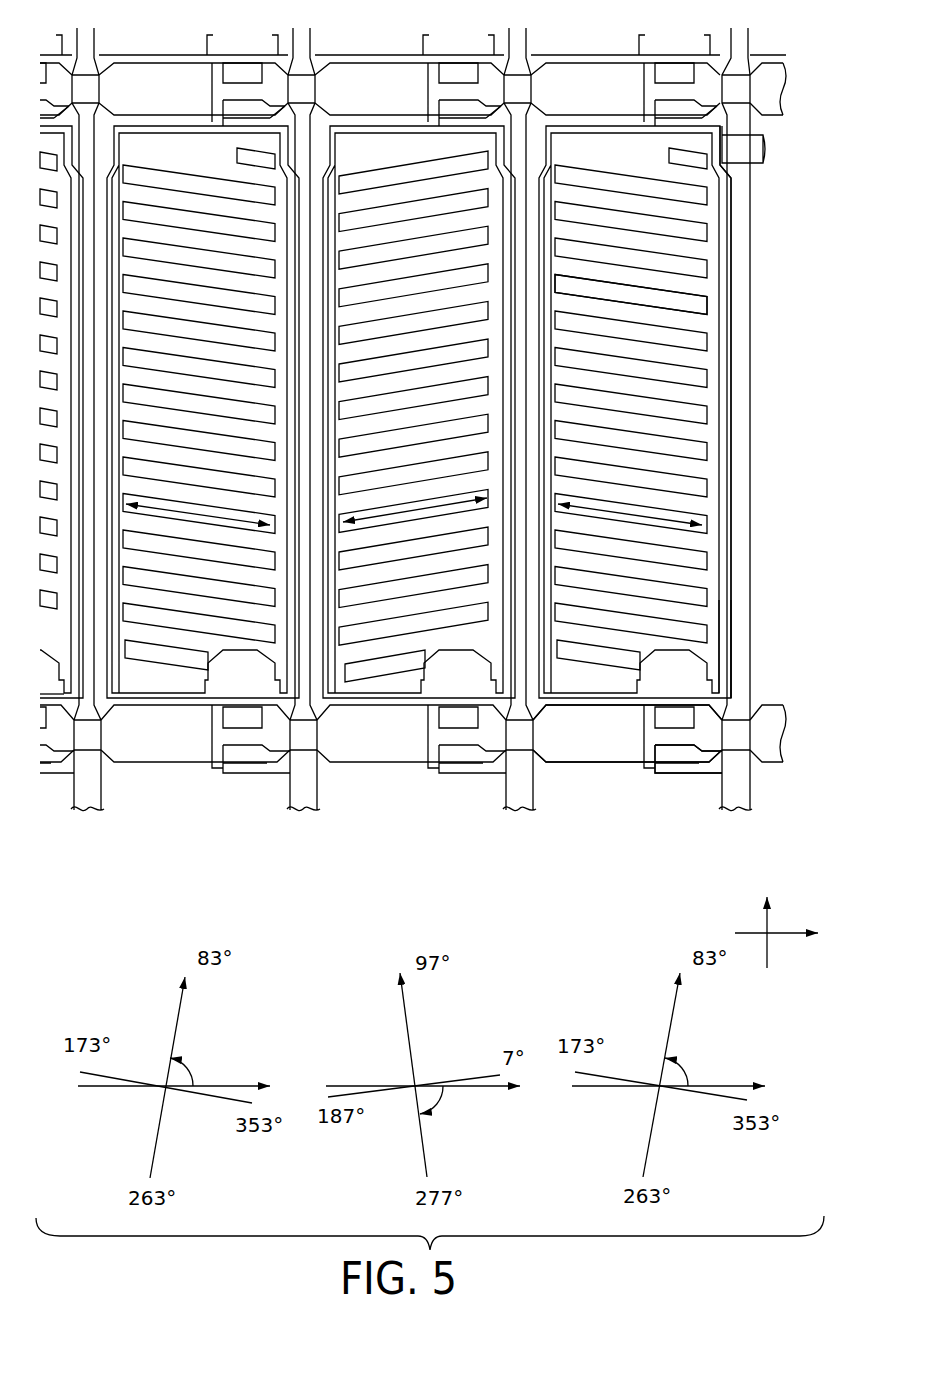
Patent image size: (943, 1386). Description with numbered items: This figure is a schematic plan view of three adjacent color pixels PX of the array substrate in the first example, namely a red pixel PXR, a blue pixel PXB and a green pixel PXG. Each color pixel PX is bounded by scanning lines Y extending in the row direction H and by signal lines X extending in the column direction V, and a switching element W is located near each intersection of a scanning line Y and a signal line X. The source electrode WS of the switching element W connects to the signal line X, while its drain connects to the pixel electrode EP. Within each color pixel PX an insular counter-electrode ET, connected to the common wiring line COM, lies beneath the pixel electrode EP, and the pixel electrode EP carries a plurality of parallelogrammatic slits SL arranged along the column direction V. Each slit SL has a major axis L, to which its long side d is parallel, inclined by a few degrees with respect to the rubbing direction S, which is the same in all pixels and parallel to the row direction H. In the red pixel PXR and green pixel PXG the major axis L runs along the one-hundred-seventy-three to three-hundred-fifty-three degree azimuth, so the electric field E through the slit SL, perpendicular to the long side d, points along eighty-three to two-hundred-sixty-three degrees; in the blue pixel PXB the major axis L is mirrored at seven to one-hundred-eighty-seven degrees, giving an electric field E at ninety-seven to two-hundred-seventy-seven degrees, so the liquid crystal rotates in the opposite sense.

The red pixel PXR is at (160, 160).
The blue pixel PXB is at (366, 160).
The green pixel PXG is at (583, 160).
The color pixel PX is at (733, 152).
The common wiring line COM is at (742, 157).
The slit SL is at (698, 308).
The long side d is at (225, 509).
The major axis L is at (180, 510).
The counter-electrode ET is at (728, 659).
The pixel electrode EP is at (722, 677).
The scanning line Y is at (771, 740).
The signal line X is at (87, 812).
The switching element W is at (618, 740).
The source electrode WS is at (673, 768).
The electric field E is at (419, 1060).
The rubbing direction S is at (431, 1077).
The column direction V is at (767, 916).
The row direction H is at (792, 934).